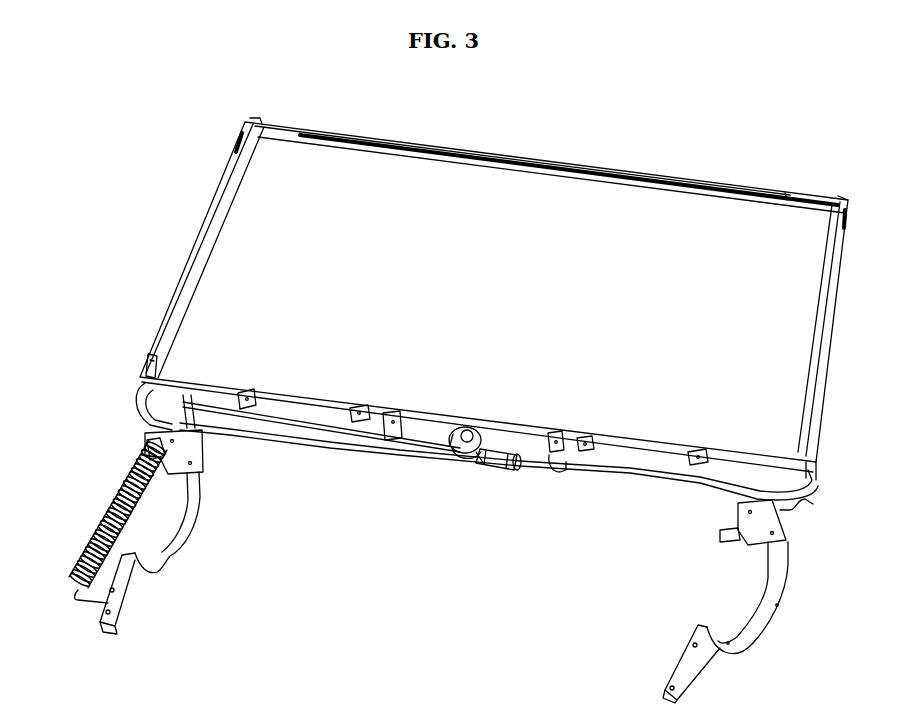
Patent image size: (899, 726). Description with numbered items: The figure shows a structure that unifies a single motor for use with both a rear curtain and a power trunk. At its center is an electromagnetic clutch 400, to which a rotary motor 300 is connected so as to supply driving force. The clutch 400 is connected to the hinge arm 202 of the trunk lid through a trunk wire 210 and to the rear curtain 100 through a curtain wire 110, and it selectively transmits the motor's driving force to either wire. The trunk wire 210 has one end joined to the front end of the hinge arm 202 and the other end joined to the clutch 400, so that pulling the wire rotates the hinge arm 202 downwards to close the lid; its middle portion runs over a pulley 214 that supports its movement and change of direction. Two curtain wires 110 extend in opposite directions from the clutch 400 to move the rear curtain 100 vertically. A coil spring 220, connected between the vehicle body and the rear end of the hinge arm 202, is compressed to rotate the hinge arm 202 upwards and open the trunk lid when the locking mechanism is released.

The rear curtain 100 is at (503, 199).
The curtain wire 110 is at (351, 452).
The trunk wire 210 is at (302, 424).
The pulley 214 is at (152, 375).
The coil spring 220 is at (110, 508).
The hinge arm 202 is at (163, 556).
The rotary motor 300 is at (496, 460).
The electromagnetic clutch 400 is at (453, 453).